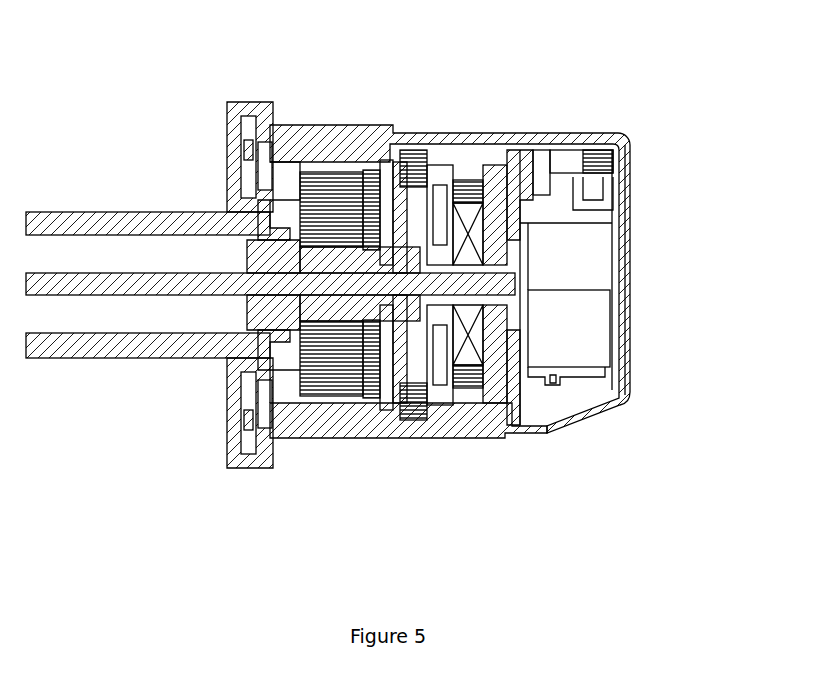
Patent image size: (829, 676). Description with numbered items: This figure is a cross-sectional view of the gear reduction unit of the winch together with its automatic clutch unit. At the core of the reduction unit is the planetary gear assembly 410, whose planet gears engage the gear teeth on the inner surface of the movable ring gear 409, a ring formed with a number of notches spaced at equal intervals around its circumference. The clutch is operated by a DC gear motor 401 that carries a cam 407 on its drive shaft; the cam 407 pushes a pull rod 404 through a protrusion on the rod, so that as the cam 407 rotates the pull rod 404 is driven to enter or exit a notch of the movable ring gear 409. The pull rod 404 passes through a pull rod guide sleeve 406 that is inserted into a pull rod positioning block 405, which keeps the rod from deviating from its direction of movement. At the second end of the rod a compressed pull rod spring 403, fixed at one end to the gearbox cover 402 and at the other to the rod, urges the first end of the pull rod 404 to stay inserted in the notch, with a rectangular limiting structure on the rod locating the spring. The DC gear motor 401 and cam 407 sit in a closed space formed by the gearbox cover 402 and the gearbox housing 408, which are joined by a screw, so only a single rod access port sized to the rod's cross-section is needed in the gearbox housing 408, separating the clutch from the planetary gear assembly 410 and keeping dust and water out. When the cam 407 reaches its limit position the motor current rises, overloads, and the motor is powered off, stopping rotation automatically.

The DC gear motor 401 is at (592, 328).
The gearbox cover 402 is at (635, 281).
The pull rod spring 403 is at (618, 142).
The pull rod 404 is at (559, 152).
The pull rod positioning block 405 is at (529, 142).
The pull rod guide sleeve 406 is at (449, 159).
The cam 407 is at (526, 176).
The gearbox housing 408 is at (412, 132).
The movable ring gear 409 is at (404, 159).
The planetary gear assembly 410 is at (511, 358).